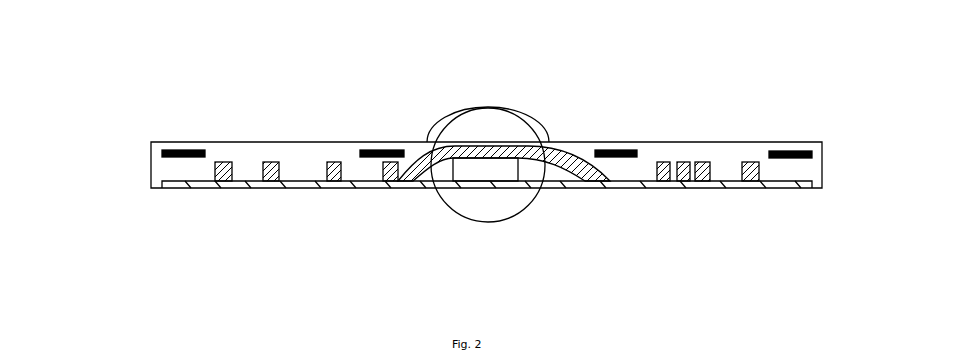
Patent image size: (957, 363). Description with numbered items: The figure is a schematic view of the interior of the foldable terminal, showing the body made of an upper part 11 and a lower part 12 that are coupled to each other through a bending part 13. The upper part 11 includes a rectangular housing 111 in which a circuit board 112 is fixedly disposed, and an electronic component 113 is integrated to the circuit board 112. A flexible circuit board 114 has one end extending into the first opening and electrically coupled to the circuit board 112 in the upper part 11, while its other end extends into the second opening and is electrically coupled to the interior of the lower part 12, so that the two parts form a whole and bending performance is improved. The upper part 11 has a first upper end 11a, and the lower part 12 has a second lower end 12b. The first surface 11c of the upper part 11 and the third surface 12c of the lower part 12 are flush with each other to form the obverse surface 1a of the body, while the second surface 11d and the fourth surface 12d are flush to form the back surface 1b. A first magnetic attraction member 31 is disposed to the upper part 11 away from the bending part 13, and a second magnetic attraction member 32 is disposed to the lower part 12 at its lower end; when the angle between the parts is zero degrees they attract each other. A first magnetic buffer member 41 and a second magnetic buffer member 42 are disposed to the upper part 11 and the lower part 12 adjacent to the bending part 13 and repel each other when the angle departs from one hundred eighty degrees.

The upper part 11 is at (291, 129).
The lower part 12 is at (691, 129).
The rectangular housing 111 is at (205, 142).
The circuit board 112 is at (172, 188).
The electronic component 113 is at (218, 186).
The flexible circuit board 114 is at (402, 181).
The first upper end 11a is at (151, 167).
The second lower end 12b is at (822, 165).
The first surface 11c is at (487, 108).
The third surface 12c is at (529, 118).
The second surface 11d is at (430, 189).
The fourth surface 12d is at (548, 189).
The obverse surface 1a is at (519, 80).
The back surface 1b is at (510, 264).
The first magnetic attraction member 31 is at (165, 150).
The second magnetic attraction member 32 is at (795, 152).
The first magnetic buffer member 41 is at (360, 149).
The second magnetic buffer member 42 is at (617, 150).
The bending part 13 is at (425, 143).